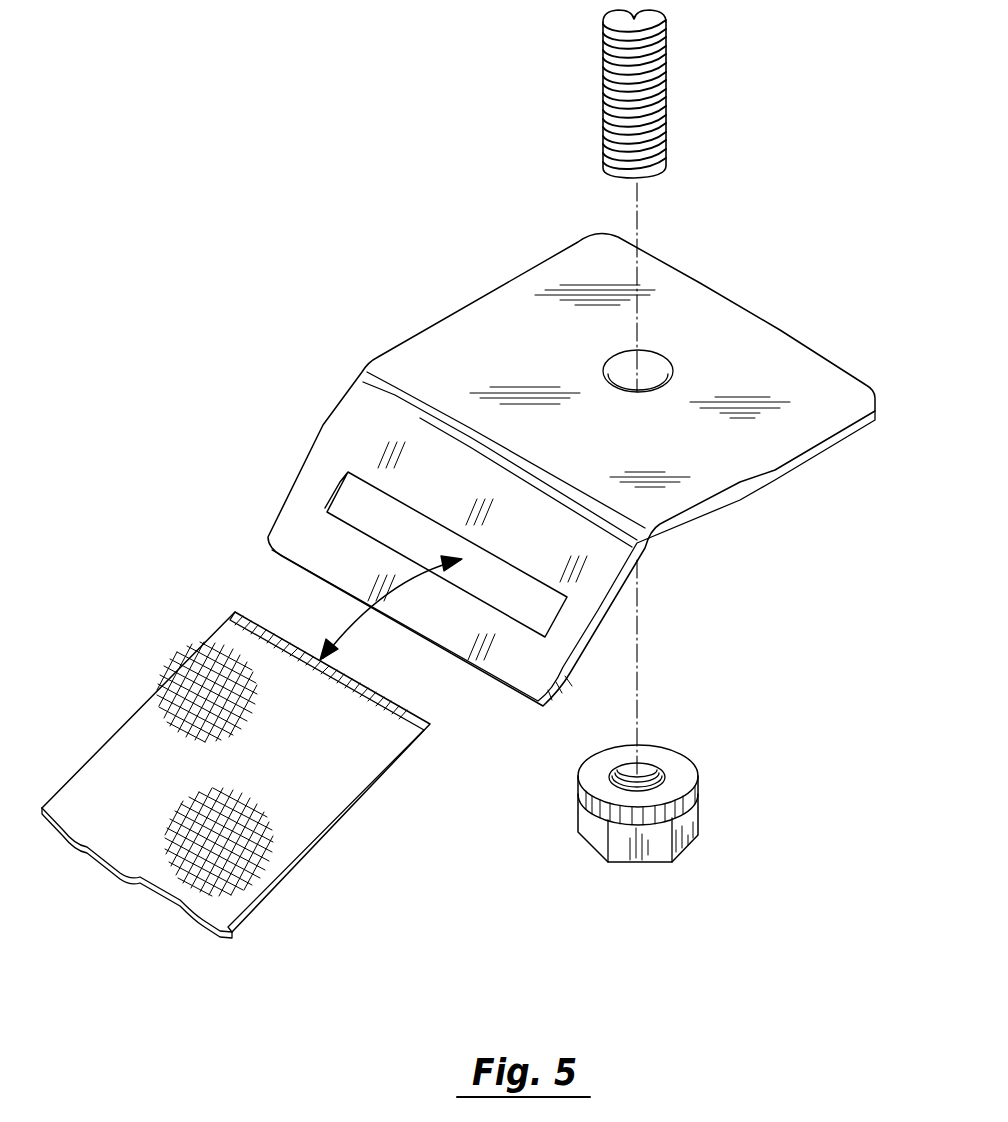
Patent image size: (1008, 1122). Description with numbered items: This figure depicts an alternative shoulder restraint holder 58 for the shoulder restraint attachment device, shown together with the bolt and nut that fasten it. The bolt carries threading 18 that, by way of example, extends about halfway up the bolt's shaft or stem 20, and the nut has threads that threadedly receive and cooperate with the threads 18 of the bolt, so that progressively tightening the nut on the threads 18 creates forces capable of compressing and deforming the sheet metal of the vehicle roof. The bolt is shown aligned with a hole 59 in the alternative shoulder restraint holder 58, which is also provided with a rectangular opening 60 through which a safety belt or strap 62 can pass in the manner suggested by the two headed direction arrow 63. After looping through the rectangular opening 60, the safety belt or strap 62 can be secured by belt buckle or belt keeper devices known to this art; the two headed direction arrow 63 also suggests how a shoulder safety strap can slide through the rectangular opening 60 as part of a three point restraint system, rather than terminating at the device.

The threading 18 is at (602, 97).
The shaft or stem 20 is at (666, 60).
The alternative shoulder restraint holder 58 is at (720, 497).
The hole 59 is at (611, 364).
The rectangular opening 60 is at (347, 472).
The safety belt or strap 62 is at (197, 695).
The two headed direction arrow 63 is at (392, 600).